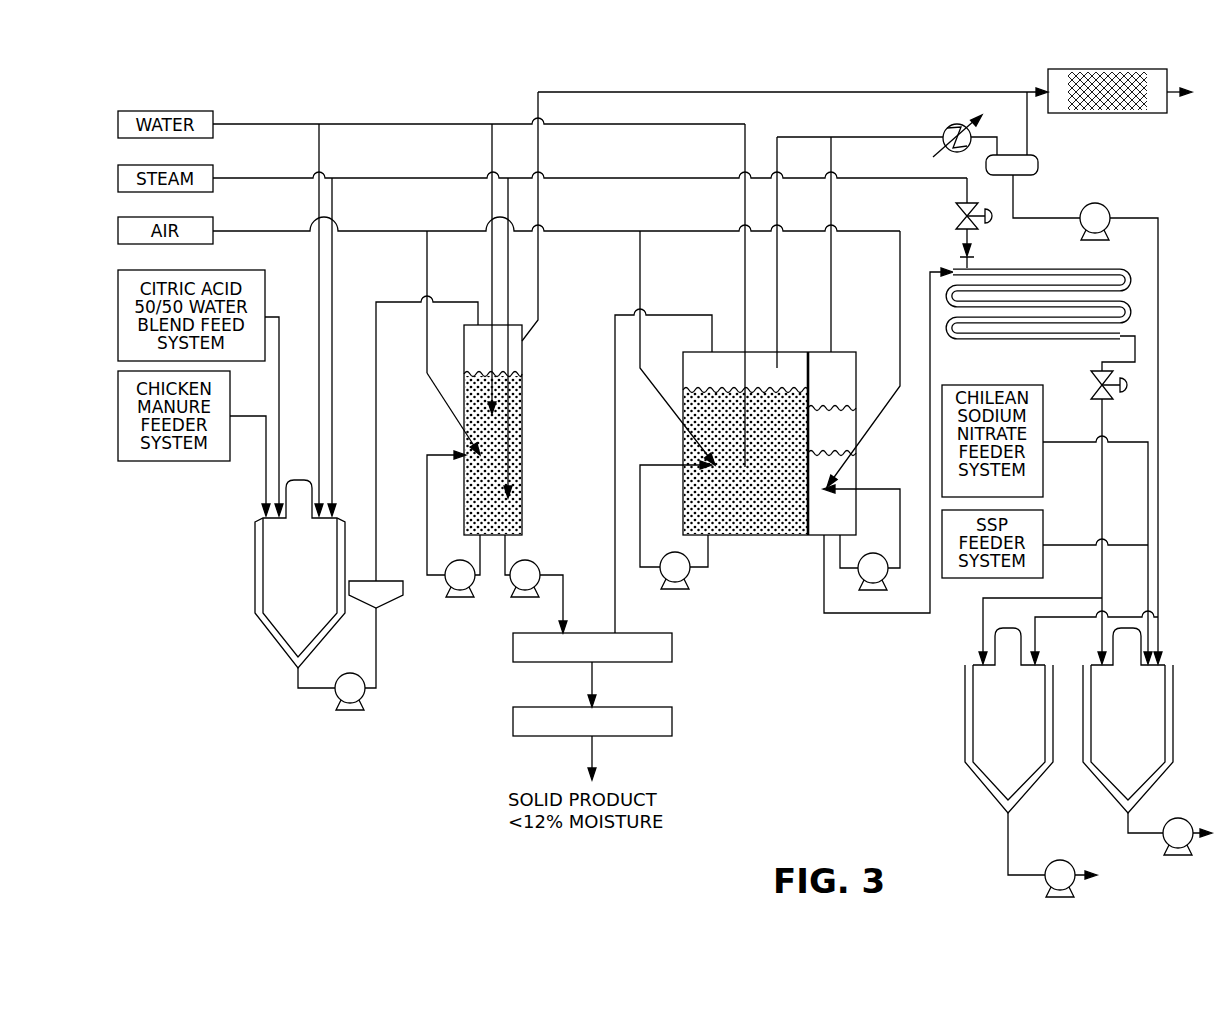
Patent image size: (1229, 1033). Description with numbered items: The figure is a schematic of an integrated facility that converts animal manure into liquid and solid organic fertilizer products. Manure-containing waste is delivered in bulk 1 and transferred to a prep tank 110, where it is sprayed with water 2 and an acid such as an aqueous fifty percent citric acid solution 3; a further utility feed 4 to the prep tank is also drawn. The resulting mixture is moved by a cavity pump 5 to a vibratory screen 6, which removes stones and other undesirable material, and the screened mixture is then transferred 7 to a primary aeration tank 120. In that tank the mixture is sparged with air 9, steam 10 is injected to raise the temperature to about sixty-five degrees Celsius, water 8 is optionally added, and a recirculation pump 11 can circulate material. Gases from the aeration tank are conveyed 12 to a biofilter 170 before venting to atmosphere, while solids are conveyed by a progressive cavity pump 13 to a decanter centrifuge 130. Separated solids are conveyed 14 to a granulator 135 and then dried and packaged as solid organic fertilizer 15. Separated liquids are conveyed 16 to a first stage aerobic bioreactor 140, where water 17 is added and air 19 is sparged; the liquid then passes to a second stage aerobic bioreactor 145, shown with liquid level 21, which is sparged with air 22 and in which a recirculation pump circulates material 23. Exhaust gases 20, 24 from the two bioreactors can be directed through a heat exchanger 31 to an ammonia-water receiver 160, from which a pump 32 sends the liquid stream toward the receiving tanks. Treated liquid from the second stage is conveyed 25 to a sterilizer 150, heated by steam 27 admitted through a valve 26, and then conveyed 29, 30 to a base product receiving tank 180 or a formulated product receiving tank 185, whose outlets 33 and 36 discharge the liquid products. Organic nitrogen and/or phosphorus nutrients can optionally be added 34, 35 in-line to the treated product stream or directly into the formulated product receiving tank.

The bulk waste product delivery 1 is at (266, 492).
The water 2 is at (319, 398).
The citric acid solution 3 is at (279, 398).
The steam feed line 4 is at (332, 352).
The cavity pump 5 is at (376, 645).
The vibratory screen 6 is at (395, 597).
The mixture transfer 7 is at (394, 302).
The water 8 is at (492, 272).
The air 9 is at (427, 362).
The steam 10 is at (512, 414).
The recirculation pump 11 is at (427, 516).
The gas conveyance 12 is at (540, 318).
The progressive cavity pump 13 is at (562, 572).
The solids conveyance 14 is at (594, 680).
The solid organic fertilizer 15 is at (594, 752).
The liquid conveyance 16 is at (615, 476).
The water 17 is at (745, 282).
The air 19 is at (640, 284).
The exhaust gases 20 is at (777, 300).
The liquid level 21 is at (832, 406).
The air 22 is at (900, 350).
The recirculated material 23 is at (887, 489).
The exhaust gases 24 is at (831, 300).
The treated liquid conveyance 25 is at (876, 613).
The steam valve 26 is at (958, 210).
The steam 27 is at (960, 246).
The sterilized liquid conveyance 29 is at (1094, 378).
The sterilized liquid conveyance 30 is at (1102, 418).
The heat exchanger 31 is at (944, 134).
The pump 32 is at (1130, 218).
The pump outlet line 33 is at (1008, 856).
The organic nutrient addition 34 is at (1067, 442).
The organic nutrient addition 35 is at (1067, 545).
The pump outlet line 36 is at (1128, 826).
The prep tank 110 is at (274, 640).
The primary aeration tank 120 is at (522, 510).
The decanter centrifuge 130 is at (513, 648).
The granulator 135 is at (513, 720).
The first stage aerobic bioreactor 140 is at (745, 535).
The second stage aerobic bioreactor 145 is at (813, 535).
The sterilizer 150 is at (1036, 268).
The ammonia-water receiver 160 is at (1038, 166).
The biofilter 170 is at (1056, 69).
The base product receiving tank 180 is at (965, 716).
The formulated product receiving tank 185 is at (1173, 716).